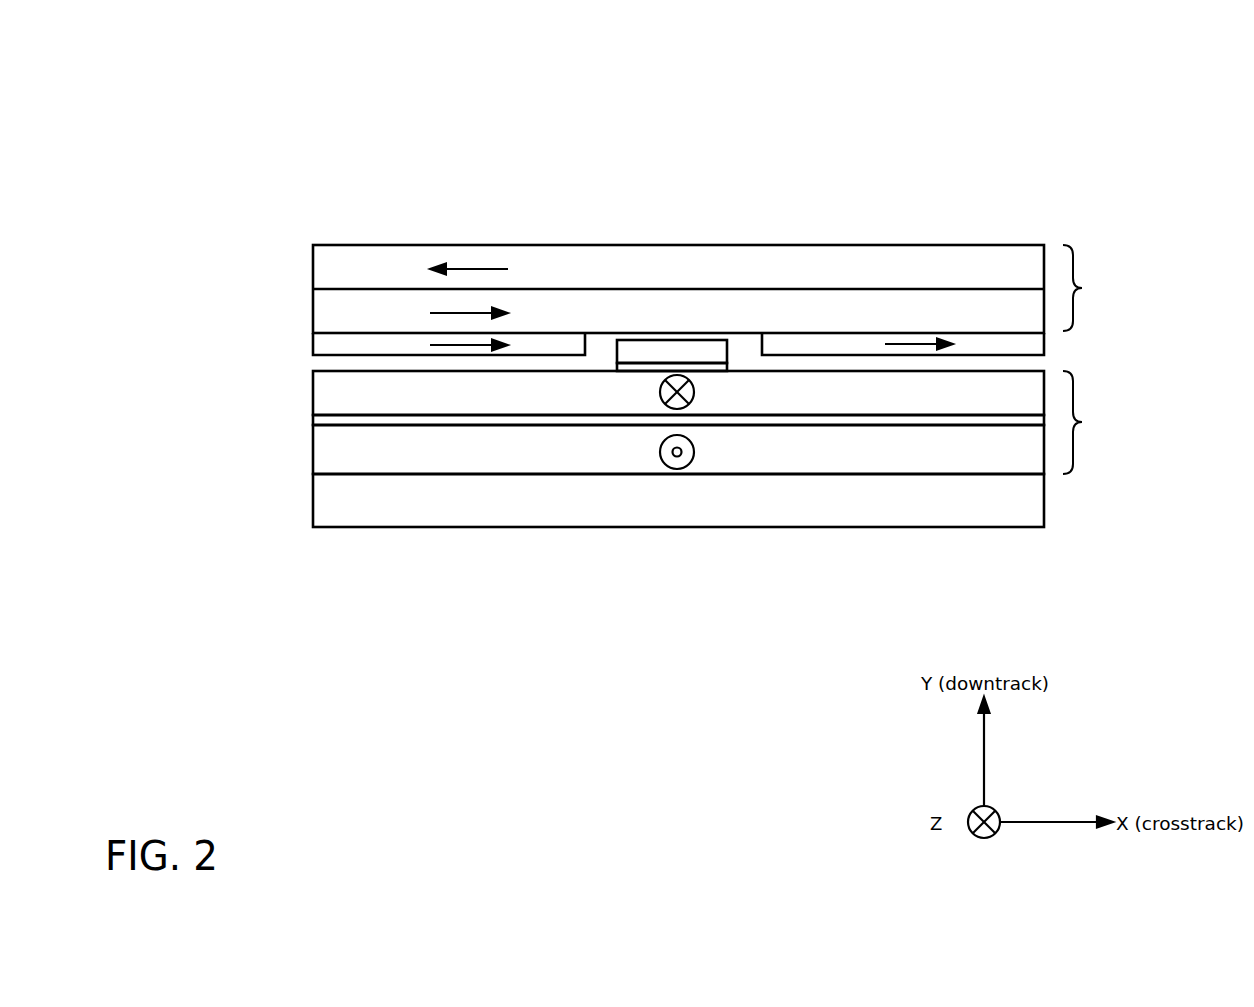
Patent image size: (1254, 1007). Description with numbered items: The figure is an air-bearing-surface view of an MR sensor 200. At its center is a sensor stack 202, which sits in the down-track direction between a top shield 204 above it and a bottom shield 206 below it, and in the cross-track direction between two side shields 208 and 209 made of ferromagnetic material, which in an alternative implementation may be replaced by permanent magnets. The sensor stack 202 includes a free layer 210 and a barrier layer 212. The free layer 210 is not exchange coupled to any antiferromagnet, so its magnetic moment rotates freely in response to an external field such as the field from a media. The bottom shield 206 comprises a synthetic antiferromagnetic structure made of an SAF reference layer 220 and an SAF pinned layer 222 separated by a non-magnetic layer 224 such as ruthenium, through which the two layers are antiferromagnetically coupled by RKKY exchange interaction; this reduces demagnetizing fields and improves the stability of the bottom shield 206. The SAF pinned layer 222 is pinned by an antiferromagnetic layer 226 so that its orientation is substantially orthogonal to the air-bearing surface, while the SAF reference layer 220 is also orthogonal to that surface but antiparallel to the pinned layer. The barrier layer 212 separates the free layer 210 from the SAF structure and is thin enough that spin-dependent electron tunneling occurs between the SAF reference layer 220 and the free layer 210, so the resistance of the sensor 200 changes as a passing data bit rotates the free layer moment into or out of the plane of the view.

The MR sensor 200 is at (200, 79).
The sensor stack 202 is at (735, 405).
The top shield 204 is at (1098, 272).
The bottom shield 206 is at (668, 445).
The side shield 208 is at (325, 344).
The side shield 209 is at (1046, 344).
The free layer 210 is at (715, 335).
The barrier layer 212 is at (707, 365).
The SAF reference layer 220 is at (313, 395).
The SAF pinned layer 222 is at (313, 458).
The non-magnetic layer 224 is at (313, 423).
The antiferromagnetic layer 226 is at (313, 507).